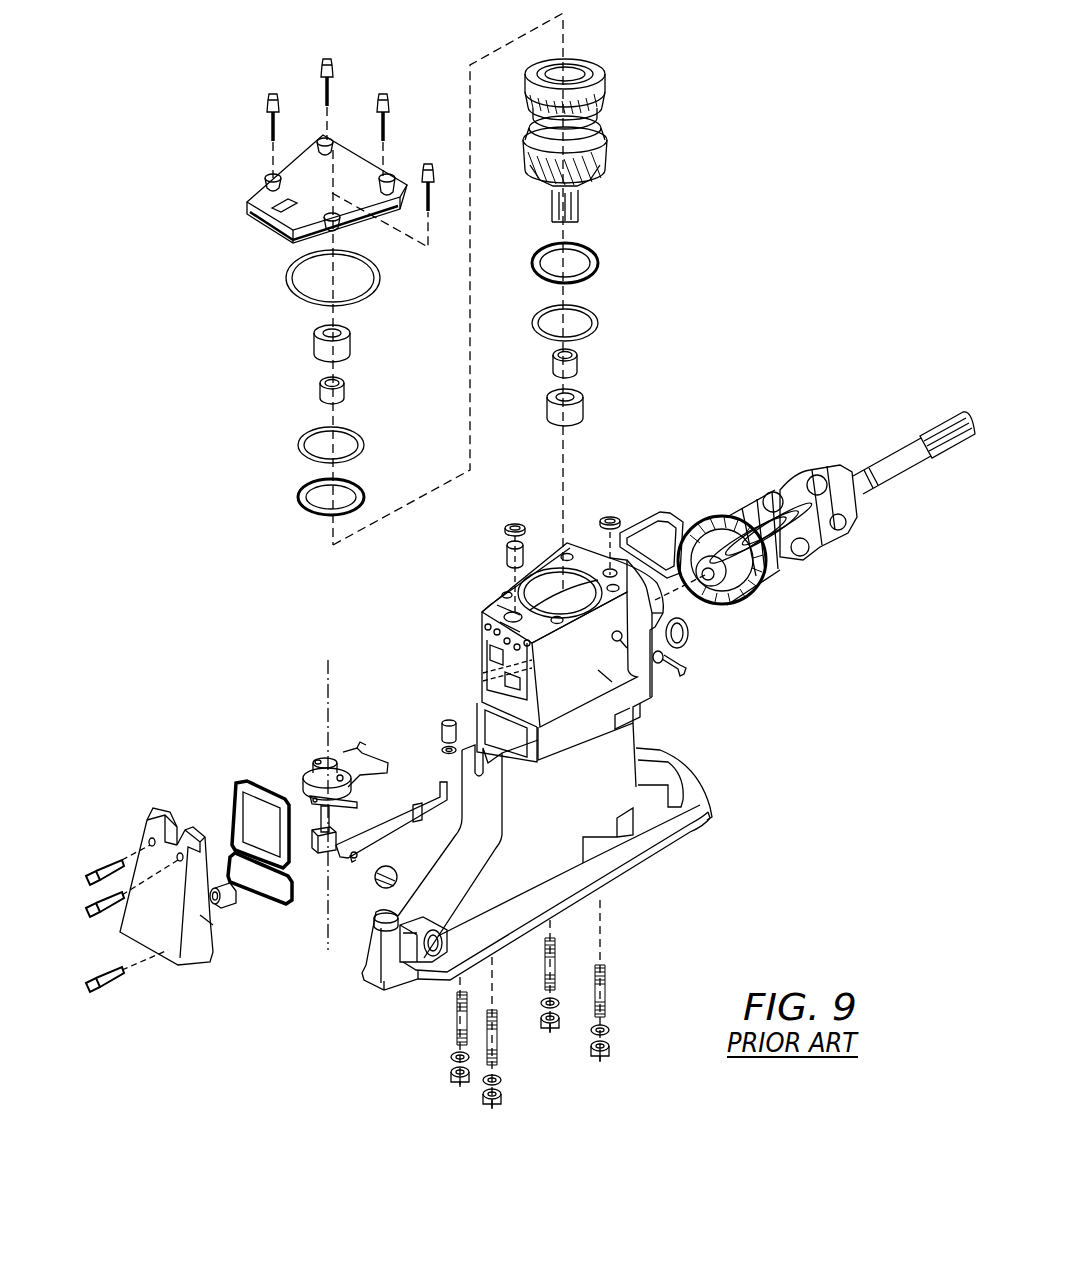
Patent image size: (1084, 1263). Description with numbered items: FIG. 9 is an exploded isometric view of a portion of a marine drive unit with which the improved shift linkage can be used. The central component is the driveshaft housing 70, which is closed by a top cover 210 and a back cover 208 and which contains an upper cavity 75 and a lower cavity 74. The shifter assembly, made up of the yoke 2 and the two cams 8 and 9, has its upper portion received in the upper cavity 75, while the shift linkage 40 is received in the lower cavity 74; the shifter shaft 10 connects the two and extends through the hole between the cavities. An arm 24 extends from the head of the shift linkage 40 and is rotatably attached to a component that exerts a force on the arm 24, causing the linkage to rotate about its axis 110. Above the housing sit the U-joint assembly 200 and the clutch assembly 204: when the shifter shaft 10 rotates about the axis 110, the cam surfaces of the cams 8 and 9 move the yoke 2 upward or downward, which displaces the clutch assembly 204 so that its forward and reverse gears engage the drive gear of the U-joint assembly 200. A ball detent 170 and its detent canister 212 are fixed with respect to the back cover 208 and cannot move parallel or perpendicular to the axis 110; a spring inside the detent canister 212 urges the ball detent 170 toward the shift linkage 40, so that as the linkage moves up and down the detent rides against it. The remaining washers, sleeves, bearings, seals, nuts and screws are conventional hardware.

The yoke 2 is at (334, 749).
The cam 8 is at (313, 765).
The cam 9 is at (350, 790).
The shifter shaft 10 is at (322, 822).
The arm 24 is at (344, 843).
The shift linkage 40 is at (313, 845).
The driveshaft housing 70 is at (598, 670).
The lower cavity 74 is at (516, 750).
The upper cavity 75 is at (490, 662).
The axis 110 is at (333, 672).
The ball detent 170 is at (240, 893).
The U-joint assembly 200 is at (850, 425).
The clutch assembly 204 is at (658, 97).
The back cover 208 is at (170, 955).
The top cover 210 is at (262, 196).
The detent canister 212 is at (232, 900).